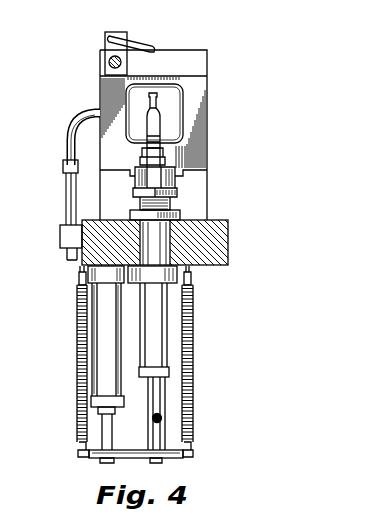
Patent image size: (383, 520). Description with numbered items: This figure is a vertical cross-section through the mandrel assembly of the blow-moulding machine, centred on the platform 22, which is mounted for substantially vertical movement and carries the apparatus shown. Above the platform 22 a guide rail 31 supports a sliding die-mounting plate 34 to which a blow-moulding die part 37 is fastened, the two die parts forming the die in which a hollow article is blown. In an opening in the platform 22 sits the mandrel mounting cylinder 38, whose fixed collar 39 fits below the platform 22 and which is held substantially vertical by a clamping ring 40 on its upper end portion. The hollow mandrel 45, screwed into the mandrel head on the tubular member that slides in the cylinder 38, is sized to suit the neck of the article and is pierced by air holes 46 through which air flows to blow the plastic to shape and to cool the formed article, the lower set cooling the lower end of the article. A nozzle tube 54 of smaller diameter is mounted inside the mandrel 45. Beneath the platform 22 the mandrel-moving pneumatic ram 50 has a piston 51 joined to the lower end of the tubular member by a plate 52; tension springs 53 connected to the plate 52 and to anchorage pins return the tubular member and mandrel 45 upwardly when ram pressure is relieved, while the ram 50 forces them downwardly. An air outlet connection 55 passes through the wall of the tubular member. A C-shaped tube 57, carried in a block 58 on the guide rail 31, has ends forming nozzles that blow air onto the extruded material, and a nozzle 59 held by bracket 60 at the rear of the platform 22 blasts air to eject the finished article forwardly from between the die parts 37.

The platform 22 is at (228, 252).
The guide rail 31 is at (108, 62).
The die-mounting plate 34 is at (195, 190).
The blow-moulding die part 37 is at (200, 86).
The mandrel mounting cylinder 38 is at (163, 338).
The fixed collar 39 is at (170, 290).
The clamping ring 40 is at (180, 213).
The hollow mandrel 45 is at (161, 124).
The air holes 46 is at (161, 140).
The mandrel-moving pneumatic ram 50 is at (107, 322).
The piston 51 is at (108, 426).
The plate 52 is at (95, 457).
The tension springs 53 is at (78, 348).
The nozzle tube 54 is at (158, 99).
The air outlet connection 55 is at (162, 418).
The C-shaped tube 57 is at (144, 43).
The block 58 is at (106, 44).
The nozzle 59 is at (67, 135).
The bracket 60 is at (60, 237).